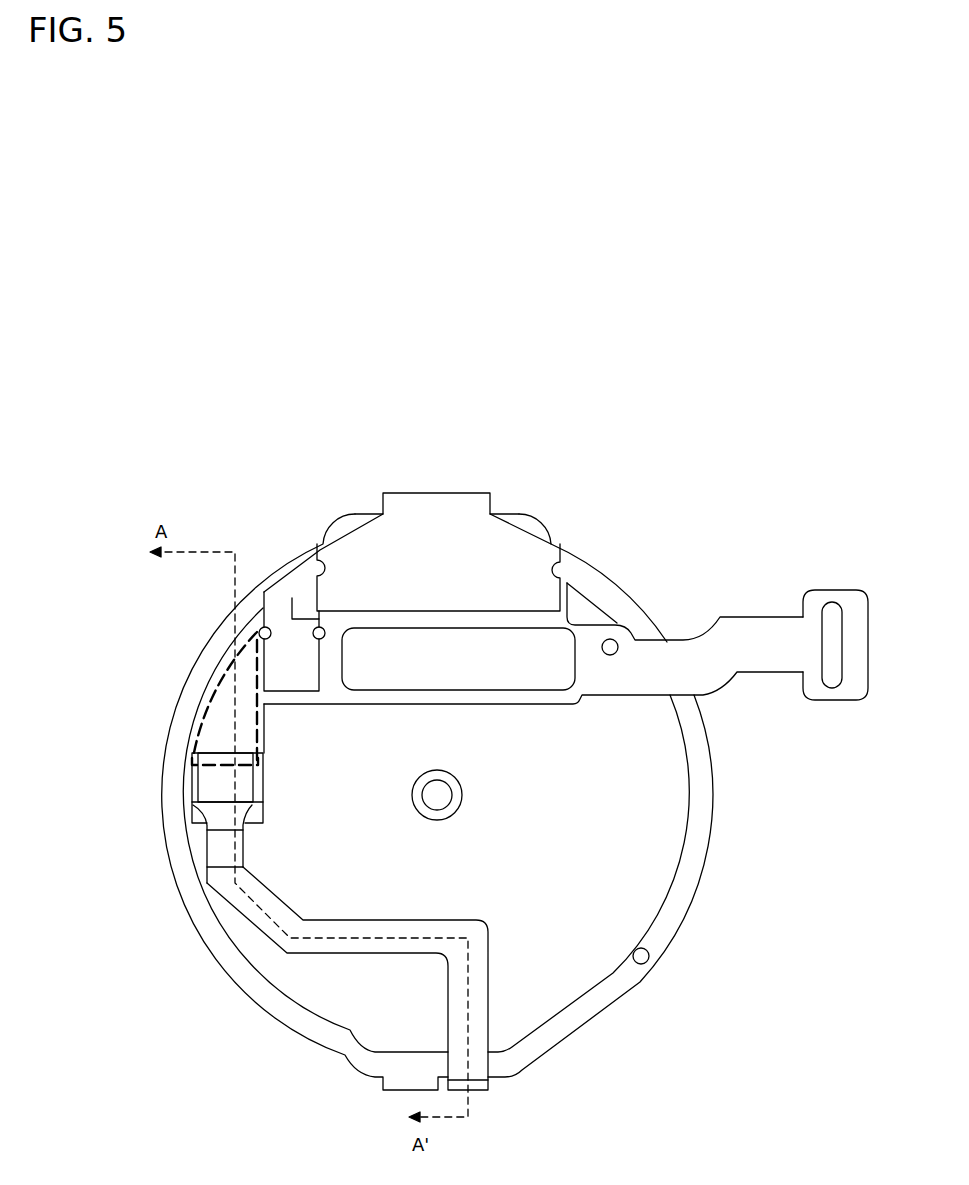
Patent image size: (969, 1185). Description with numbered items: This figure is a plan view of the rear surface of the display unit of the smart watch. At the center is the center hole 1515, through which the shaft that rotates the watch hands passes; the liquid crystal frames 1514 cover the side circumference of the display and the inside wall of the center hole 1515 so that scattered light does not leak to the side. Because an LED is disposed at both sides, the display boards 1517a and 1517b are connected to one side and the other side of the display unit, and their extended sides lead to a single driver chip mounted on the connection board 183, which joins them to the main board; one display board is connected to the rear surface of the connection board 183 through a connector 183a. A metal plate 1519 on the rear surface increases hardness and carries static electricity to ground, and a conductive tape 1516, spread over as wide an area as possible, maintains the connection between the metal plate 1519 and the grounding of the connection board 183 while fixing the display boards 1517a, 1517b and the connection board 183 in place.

The liquid crystal frame 1514 is at (702, 770).
The center hole 1515 is at (437, 794).
The conductive tape 1516 is at (204, 709).
The display board 1517a is at (285, 603).
The second display board 1517b is at (330, 940).
The metal plate 1519 is at (638, 898).
The connection board 183 is at (710, 657).
The connector 183a is at (195, 778).